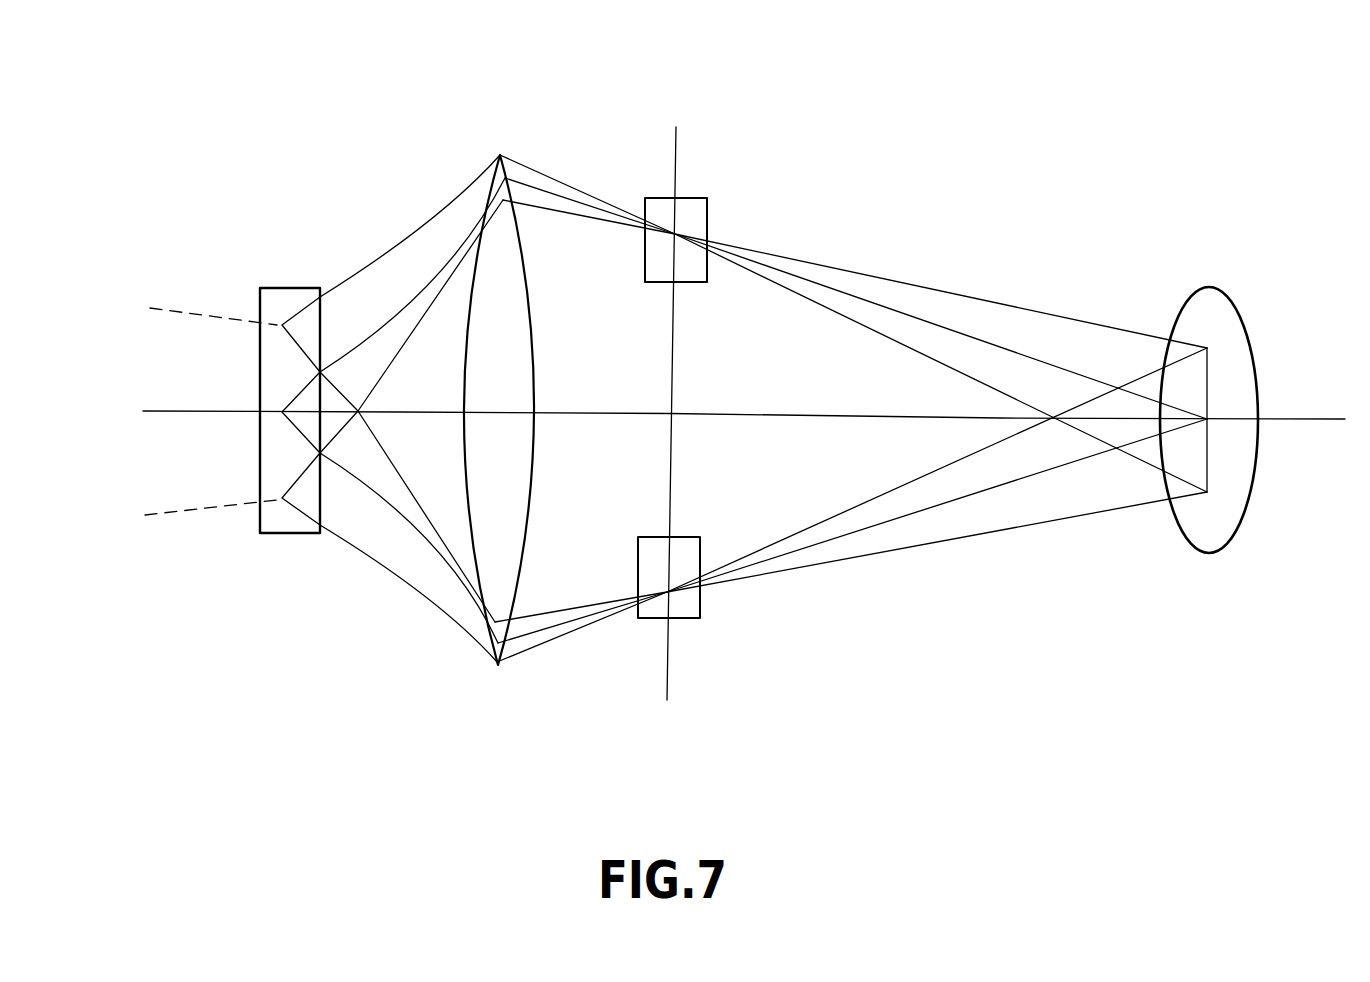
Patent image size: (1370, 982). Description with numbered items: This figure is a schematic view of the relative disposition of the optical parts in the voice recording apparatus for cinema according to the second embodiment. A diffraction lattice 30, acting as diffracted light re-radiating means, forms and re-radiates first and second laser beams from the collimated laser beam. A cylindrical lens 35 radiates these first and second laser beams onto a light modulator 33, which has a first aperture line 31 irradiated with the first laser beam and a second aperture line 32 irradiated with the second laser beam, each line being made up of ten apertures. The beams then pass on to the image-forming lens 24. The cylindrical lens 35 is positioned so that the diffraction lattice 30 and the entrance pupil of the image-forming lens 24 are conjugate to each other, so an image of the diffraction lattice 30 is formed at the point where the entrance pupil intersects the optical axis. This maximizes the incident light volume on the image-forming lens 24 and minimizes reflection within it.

The diffraction lattice 30 is at (277, 523).
The cylindrical lens 35 is at (493, 658).
The light modulator 33 is at (693, 147).
The first aperture line 31 is at (695, 222).
The second aperture line 32 is at (707, 613).
The image-forming lens 24 is at (1215, 308).